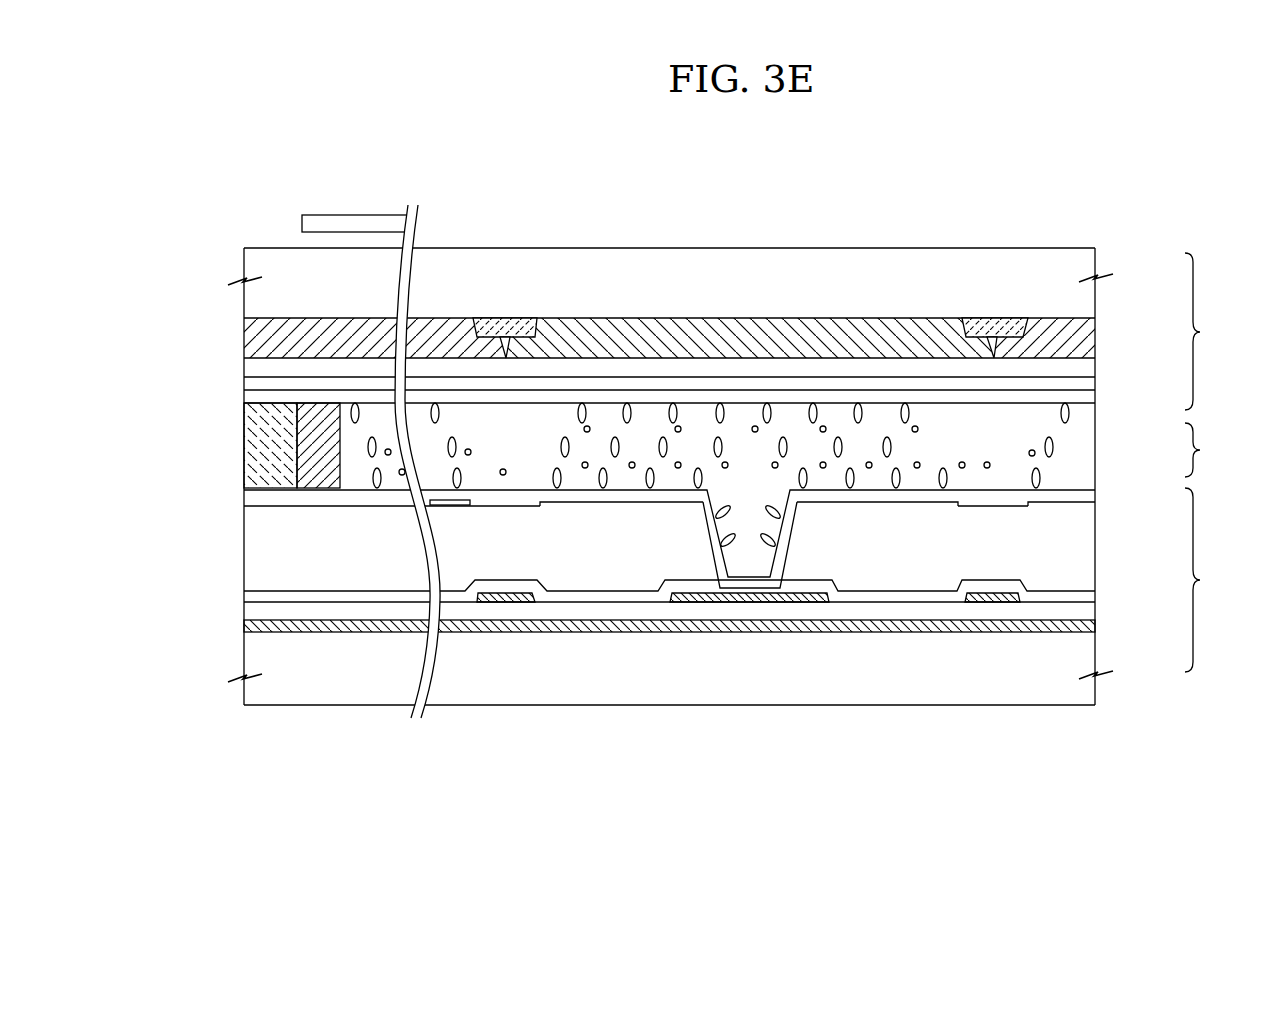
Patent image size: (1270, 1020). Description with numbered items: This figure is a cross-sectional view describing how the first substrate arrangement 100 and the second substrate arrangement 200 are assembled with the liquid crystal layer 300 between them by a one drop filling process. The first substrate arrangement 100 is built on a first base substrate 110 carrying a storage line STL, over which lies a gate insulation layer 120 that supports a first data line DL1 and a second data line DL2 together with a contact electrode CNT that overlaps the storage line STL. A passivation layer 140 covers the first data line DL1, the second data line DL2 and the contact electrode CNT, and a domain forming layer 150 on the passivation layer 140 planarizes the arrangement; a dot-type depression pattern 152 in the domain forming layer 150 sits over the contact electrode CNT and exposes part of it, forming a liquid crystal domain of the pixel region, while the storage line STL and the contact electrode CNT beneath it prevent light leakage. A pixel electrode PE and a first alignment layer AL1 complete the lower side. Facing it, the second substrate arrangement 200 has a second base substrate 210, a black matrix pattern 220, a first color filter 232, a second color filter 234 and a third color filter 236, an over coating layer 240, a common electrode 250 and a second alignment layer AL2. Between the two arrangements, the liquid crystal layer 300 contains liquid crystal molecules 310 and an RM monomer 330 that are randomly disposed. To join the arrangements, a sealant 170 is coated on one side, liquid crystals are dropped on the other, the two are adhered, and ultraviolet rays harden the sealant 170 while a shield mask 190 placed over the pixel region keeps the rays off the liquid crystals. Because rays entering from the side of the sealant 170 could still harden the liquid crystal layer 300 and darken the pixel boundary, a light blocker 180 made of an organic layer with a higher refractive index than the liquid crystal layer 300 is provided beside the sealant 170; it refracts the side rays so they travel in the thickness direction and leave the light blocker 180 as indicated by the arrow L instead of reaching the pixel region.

The first substrate arrangement 100 is at (1214, 580).
The first base substrate 110 is at (1085, 642).
The gate insulation layer 120 is at (1085, 612).
The passivation layer 140 is at (1085, 597).
The domain forming layer 150 is at (1085, 550).
The depression pattern 152 is at (752, 568).
The sealant 170 is at (258, 443).
The light blocker 180 is at (297, 477).
The shield mask 190 is at (318, 221).
The second substrate arrangement 200 is at (1214, 331).
The second base substrate 210 is at (1085, 262).
The black matrix pattern 220 is at (508, 330).
The first color filter 232 is at (753, 333).
The second color filter 234 is at (447, 333).
The third color filter 236 is at (1057, 333).
The over coating layer 240 is at (1085, 371).
The common electrode 250 is at (1085, 384).
The liquid crystal layer 300 is at (1214, 450).
The liquid crystal molecules 310 is at (1067, 421).
The RM monomer 330 is at (1035, 455).
The first alignment layer AL1 is at (1085, 496).
The second alignment layer AL2 is at (1085, 397).
The storage line STL is at (1087, 627).
The first data line DL1 is at (505, 603).
The second data line DL2 is at (990, 603).
The contact electrode CNT is at (690, 600).
The pixel electrode PE is at (882, 508).
The arrow indicating refracted UV rays L is at (318, 476).